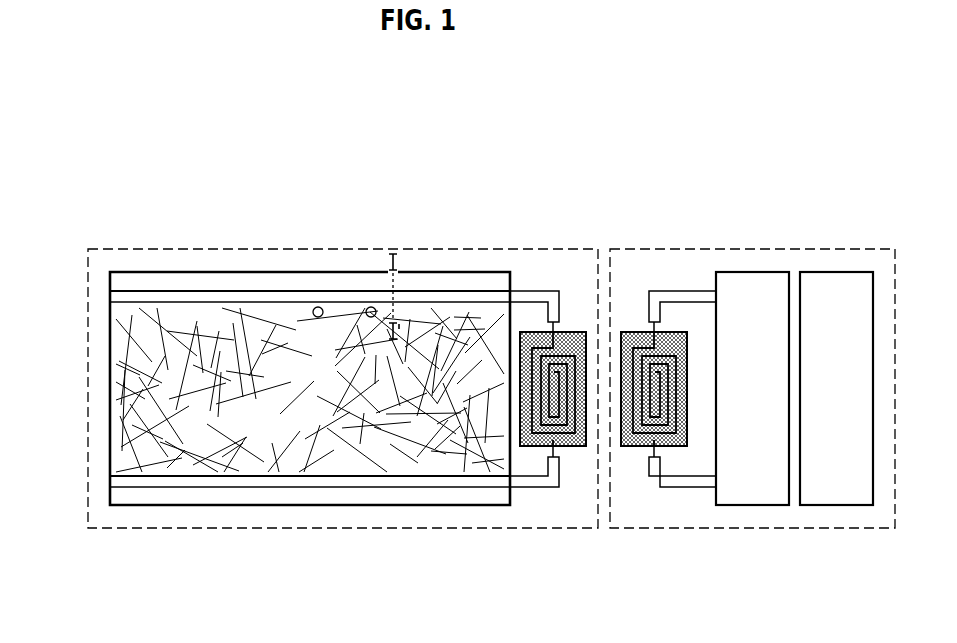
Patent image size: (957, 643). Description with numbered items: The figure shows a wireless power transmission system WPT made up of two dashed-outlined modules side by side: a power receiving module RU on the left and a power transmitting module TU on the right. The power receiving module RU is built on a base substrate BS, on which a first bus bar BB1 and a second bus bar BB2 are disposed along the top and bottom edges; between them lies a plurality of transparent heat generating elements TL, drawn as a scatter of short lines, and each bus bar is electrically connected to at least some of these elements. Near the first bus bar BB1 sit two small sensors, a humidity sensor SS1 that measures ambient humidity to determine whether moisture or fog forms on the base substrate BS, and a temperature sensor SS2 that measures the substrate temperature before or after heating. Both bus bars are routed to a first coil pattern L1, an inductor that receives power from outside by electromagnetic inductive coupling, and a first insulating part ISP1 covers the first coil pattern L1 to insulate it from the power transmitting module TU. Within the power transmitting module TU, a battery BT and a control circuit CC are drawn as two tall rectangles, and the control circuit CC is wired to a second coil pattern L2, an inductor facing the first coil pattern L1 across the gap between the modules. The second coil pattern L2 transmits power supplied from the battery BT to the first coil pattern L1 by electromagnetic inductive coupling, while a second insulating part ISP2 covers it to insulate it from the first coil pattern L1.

The wireless power transmission system WPT is at (460, 338).
The power receiving module RU is at (476, 249).
The power transmitting module TU is at (843, 249).
The base substrate BS is at (122, 281).
The first bus bar BB1 is at (258, 296).
The second bus bar BB2 is at (258, 480).
The transparent heat generating elements TL is at (130, 369).
The humidity sensor SS1 is at (318, 306).
The temperature sensor SS2 is at (371, 306).
The first insulating part ISP1 is at (568, 330).
The second insulating part ISP2 is at (638, 330).
The first coil pattern L1 is at (538, 447).
The second coil pattern L2 is at (639, 447).
The control circuit CC is at (752, 505).
The battery BT is at (839, 505).